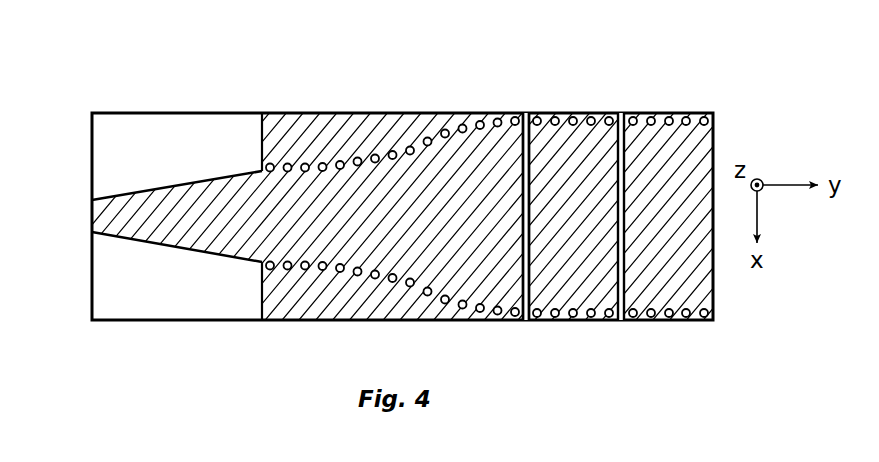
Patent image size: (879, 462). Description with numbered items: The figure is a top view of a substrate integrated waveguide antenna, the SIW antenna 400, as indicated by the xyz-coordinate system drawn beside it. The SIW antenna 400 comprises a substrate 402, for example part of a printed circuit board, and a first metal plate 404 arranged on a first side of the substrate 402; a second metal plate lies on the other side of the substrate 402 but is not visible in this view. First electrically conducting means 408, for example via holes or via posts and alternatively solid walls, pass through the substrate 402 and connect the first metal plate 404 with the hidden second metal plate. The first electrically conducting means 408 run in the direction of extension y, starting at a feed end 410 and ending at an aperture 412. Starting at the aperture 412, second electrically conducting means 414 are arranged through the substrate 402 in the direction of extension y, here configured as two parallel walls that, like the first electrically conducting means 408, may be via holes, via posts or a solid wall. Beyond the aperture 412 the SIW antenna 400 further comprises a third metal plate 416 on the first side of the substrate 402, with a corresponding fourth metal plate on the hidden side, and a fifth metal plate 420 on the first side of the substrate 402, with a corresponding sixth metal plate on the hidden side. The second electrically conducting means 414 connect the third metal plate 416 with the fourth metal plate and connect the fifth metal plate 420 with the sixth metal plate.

The SIW antenna 400 is at (116, 56).
The substrate 402 is at (100, 152).
The first metal plate 404 is at (320, 122).
The first electrically conducting means 408 is at (422, 139).
The feed end 410 is at (106, 217).
The aperture 412 is at (526, 225).
The second electrically conducting means 414 is at (577, 112).
The third metal plate 416 is at (540, 113).
The fifth metal plate 420 is at (658, 113).